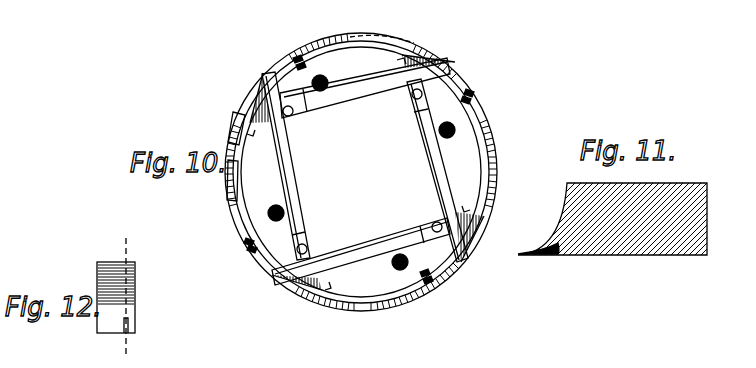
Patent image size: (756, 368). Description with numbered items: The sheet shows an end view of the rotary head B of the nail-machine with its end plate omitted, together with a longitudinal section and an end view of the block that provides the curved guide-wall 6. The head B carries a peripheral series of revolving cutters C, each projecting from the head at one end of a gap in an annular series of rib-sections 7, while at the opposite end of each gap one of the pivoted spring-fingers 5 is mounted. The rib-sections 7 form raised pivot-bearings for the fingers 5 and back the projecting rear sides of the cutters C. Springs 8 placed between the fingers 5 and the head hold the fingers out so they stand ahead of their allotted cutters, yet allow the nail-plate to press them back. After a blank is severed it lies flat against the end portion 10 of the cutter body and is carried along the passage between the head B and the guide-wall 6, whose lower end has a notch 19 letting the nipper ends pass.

In FIG. 10, the spring-fingers 5 is at (328, 35).
In FIG. 11, the curved guide-wall 6 is at (567, 212).
In FIG. 12, the curved guide-wall 6 is at (137, 309).
In FIG. 10, the rib-sections 7 is at (250, 103).
In FIG. 11, the rib-sections 7 is at (518, 202).
In FIG. 10, the springs 8 is at (297, 57).
In FIG. 10, the end portion of the cutter body 10 is at (448, 63).
In FIG. 11, the notch 19 is at (534, 252).
In FIG. 12, the notch 19 is at (131, 333).
In FIG. 10, the rotary head B is at (361, 172).
In FIG. 10, the revolving cutters C is at (262, 79).